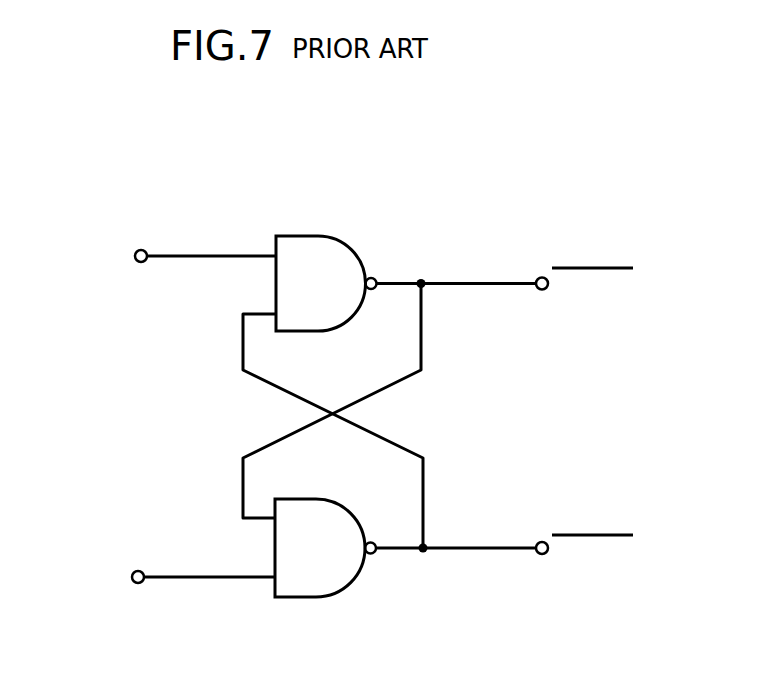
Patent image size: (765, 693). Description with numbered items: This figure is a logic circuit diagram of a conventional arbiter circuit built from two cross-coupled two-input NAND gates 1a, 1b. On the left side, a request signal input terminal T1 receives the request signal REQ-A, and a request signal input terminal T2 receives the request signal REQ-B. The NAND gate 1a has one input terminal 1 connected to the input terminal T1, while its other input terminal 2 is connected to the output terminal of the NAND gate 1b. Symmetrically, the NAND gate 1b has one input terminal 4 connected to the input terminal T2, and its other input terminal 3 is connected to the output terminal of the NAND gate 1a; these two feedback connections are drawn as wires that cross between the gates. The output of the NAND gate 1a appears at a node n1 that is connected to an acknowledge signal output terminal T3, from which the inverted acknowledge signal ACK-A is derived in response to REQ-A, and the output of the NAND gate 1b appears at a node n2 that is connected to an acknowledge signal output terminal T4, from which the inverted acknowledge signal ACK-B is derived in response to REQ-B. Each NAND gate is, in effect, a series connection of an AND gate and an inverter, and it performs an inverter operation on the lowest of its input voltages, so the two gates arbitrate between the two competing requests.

The input terminal 1 is at (275, 250).
The two-input NAND gate 1a is at (312, 248).
The two-input NAND gate 1b is at (335, 580).
The input terminal 2 is at (272, 312).
The input terminal 3 is at (270, 522).
The input terminal 4 is at (270, 582).
The output node of NAND gate 1a n1 is at (421, 280).
The output node of NAND gate 1b n2 is at (430, 544).
The request signal input terminal T1 is at (138, 250).
The request signal input terminal T2 is at (136, 571).
The acknowledge signal output terminal T3 is at (542, 277).
The acknowledge signal output terminal T4 is at (542, 541).